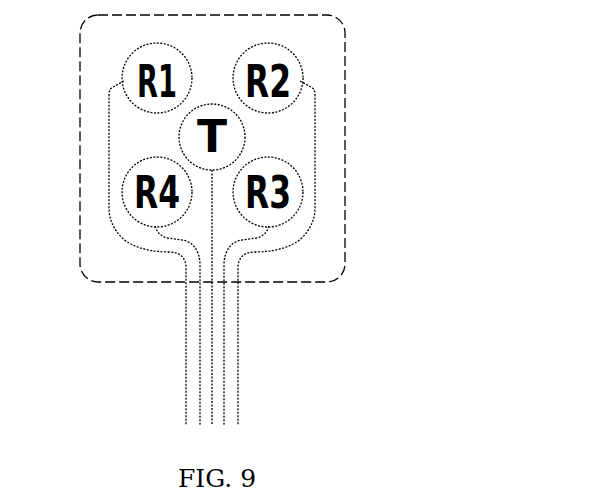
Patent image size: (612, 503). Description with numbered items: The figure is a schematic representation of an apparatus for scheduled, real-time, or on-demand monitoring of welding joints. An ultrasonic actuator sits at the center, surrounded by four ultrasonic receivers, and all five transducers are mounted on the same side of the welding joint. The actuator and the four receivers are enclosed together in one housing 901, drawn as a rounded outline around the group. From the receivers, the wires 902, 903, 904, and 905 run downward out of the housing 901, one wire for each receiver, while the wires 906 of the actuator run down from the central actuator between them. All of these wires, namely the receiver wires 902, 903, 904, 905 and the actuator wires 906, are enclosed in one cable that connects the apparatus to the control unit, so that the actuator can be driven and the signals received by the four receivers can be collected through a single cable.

The housing 901 is at (343, 60).
The receiver wire 902 is at (186, 358).
The receiver wire 903 is at (198, 417).
The receiver wire 904 is at (226, 343).
The receiver wire 905 is at (239, 395).
The actuator wires 906 is at (212, 380).